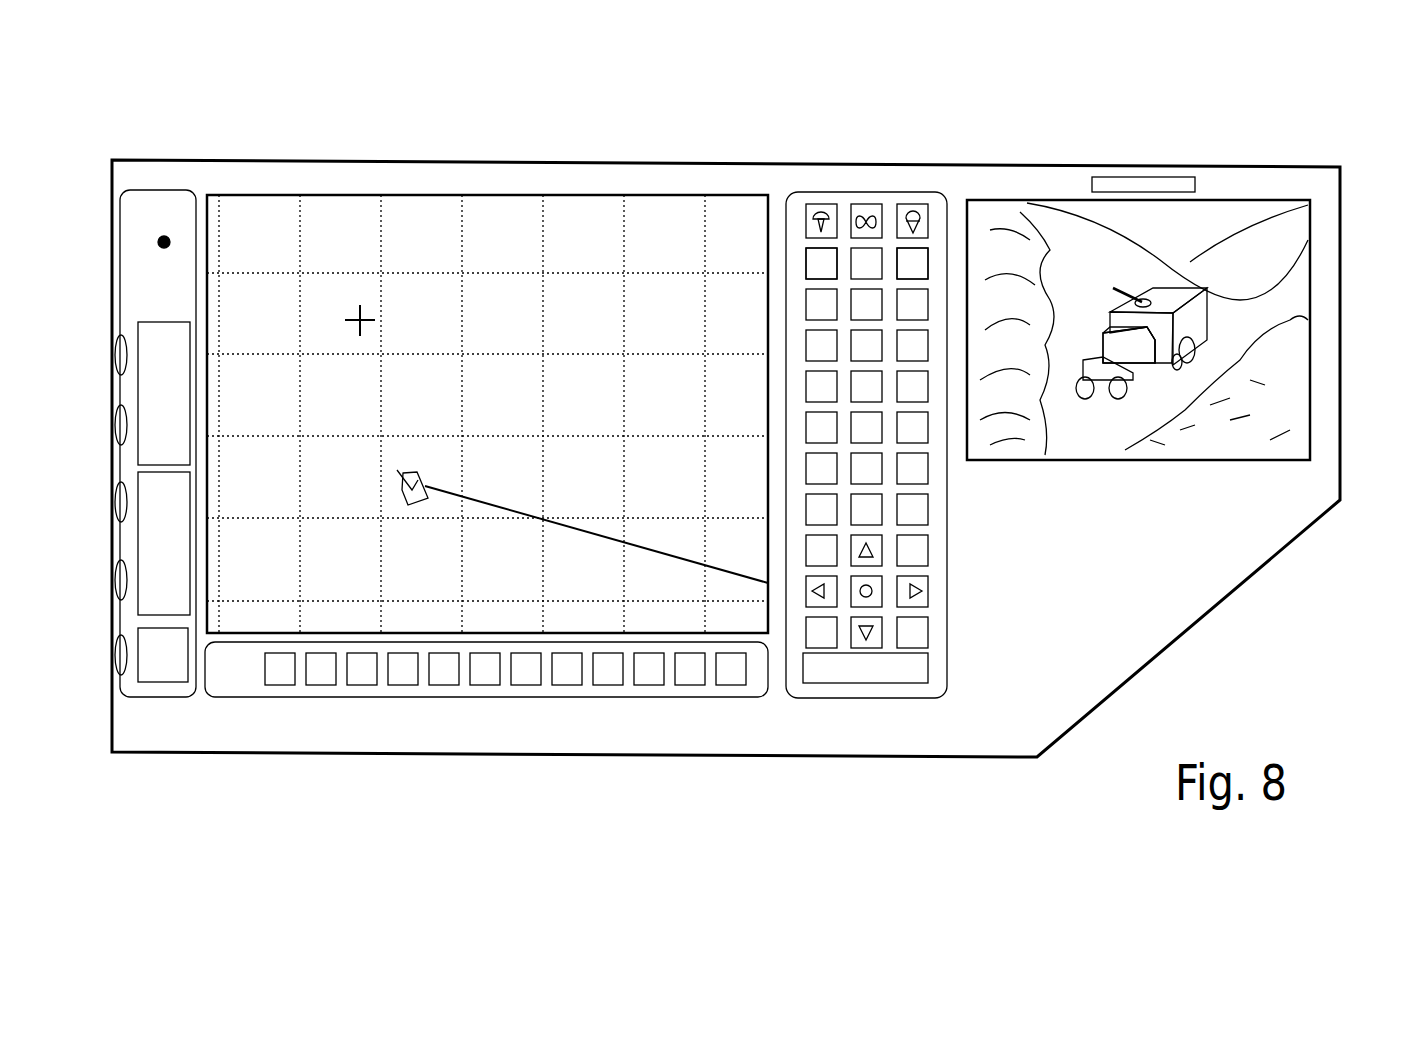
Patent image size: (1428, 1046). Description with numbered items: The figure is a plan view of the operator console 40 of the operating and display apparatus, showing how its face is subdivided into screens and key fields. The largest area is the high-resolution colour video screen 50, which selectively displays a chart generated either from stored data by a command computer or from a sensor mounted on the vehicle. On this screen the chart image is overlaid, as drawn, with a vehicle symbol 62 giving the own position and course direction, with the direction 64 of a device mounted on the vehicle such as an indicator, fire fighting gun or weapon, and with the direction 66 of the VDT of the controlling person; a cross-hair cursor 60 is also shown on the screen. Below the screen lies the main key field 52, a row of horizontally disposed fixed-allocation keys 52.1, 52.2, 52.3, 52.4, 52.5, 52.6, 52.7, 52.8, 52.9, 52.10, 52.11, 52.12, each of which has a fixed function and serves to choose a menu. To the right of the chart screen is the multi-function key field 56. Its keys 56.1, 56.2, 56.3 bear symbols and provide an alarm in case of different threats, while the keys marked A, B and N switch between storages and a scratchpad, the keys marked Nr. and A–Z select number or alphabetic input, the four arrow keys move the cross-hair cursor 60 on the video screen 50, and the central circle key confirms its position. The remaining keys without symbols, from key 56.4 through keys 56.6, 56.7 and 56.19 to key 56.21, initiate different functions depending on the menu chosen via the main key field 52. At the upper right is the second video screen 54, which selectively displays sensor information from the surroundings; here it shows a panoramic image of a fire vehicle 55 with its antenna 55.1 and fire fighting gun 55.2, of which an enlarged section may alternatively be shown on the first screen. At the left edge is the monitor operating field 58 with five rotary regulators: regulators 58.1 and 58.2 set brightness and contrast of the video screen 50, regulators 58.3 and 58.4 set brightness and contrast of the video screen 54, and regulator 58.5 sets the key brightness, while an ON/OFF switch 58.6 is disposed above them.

The operator console 40 is at (1215, 623).
The high-resolution colour video screen 50 is at (432, 186).
The main key field 52 is at (367, 722).
The fixed-allocation key 52.1 is at (268, 685).
The fixed-allocation key 52.2 is at (312, 685).
The fixed-allocation key 52.3 is at (354, 685).
The fixed-allocation key 52.4 is at (395, 685).
The fixed-allocation key 52.5 is at (440, 685).
The fixed-allocation key 52.6 is at (480, 685).
The fixed-allocation key 52.7 is at (523, 685).
The fixed-allocation key 52.8 is at (565, 685).
The fixed-allocation key 52.9 is at (606, 685).
The fixed-allocation key 52.10 is at (650, 685).
The fixed-allocation key 52.11 is at (694, 685).
The fixed-allocation key 52.12 is at (738, 685).
The video screen 54 is at (1232, 190).
The fire vehicle 55 is at (1225, 320).
The antenna 55.1 is at (1195, 290).
The fire fighting gun 55.2 is at (1130, 296).
The multi-function key field 56 is at (894, 152).
The alarm key 56.1 is at (818, 205).
The alarm key 56.2 is at (862, 205).
The alarm key 56.3 is at (913, 205).
The unmarked key 56.4 is at (807, 262).
The unmarked key 56.6 is at (927, 262).
The unmarked key 56.7 is at (808, 305).
The unmarked key 56.19 is at (810, 466).
The unmarked key 56.21 is at (918, 470).
The monitor operating field 58 is at (152, 182).
The rotary regulator 58.1 is at (184, 369).
The rotary regulator 58.2 is at (184, 439).
The rotary regulator 58.3 is at (184, 516).
The rotary regulator 58.4 is at (184, 594).
The rotary regulator 58.5 is at (184, 669).
The ON/OFF switch 58.6 is at (158, 250).
The cross-hair cursor 60 is at (358, 318).
The vehicle symbol 62 is at (400, 488).
The direction of vehicle-mounted device 64 is at (413, 468).
The direction of VDT 66 is at (486, 502).